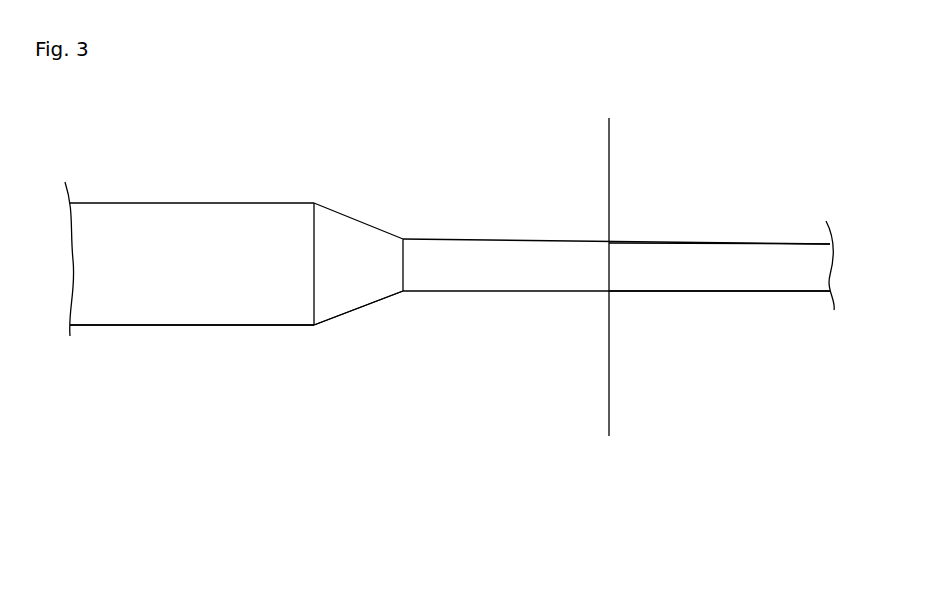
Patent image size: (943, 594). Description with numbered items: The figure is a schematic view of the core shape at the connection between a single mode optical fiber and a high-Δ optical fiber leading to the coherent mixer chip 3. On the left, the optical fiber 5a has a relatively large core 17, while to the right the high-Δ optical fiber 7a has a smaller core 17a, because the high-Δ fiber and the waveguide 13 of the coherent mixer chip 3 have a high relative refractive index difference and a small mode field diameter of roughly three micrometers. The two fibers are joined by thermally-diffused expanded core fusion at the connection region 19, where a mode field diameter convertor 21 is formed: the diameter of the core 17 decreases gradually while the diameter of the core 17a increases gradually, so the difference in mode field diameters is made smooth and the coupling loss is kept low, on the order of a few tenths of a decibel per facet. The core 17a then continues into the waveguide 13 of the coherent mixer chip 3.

The core 17 is at (165, 217).
The optical fiber 5a is at (232, 314).
The connection region 19 is at (404, 191).
The mode field diameter convertor 21 is at (392, 350).
The core 17a is at (453, 251).
The high-Δ optical fiber 7a is at (500, 286).
The waveguide 13 is at (710, 282).
The coherent mixer chip 3 is at (645, 178).